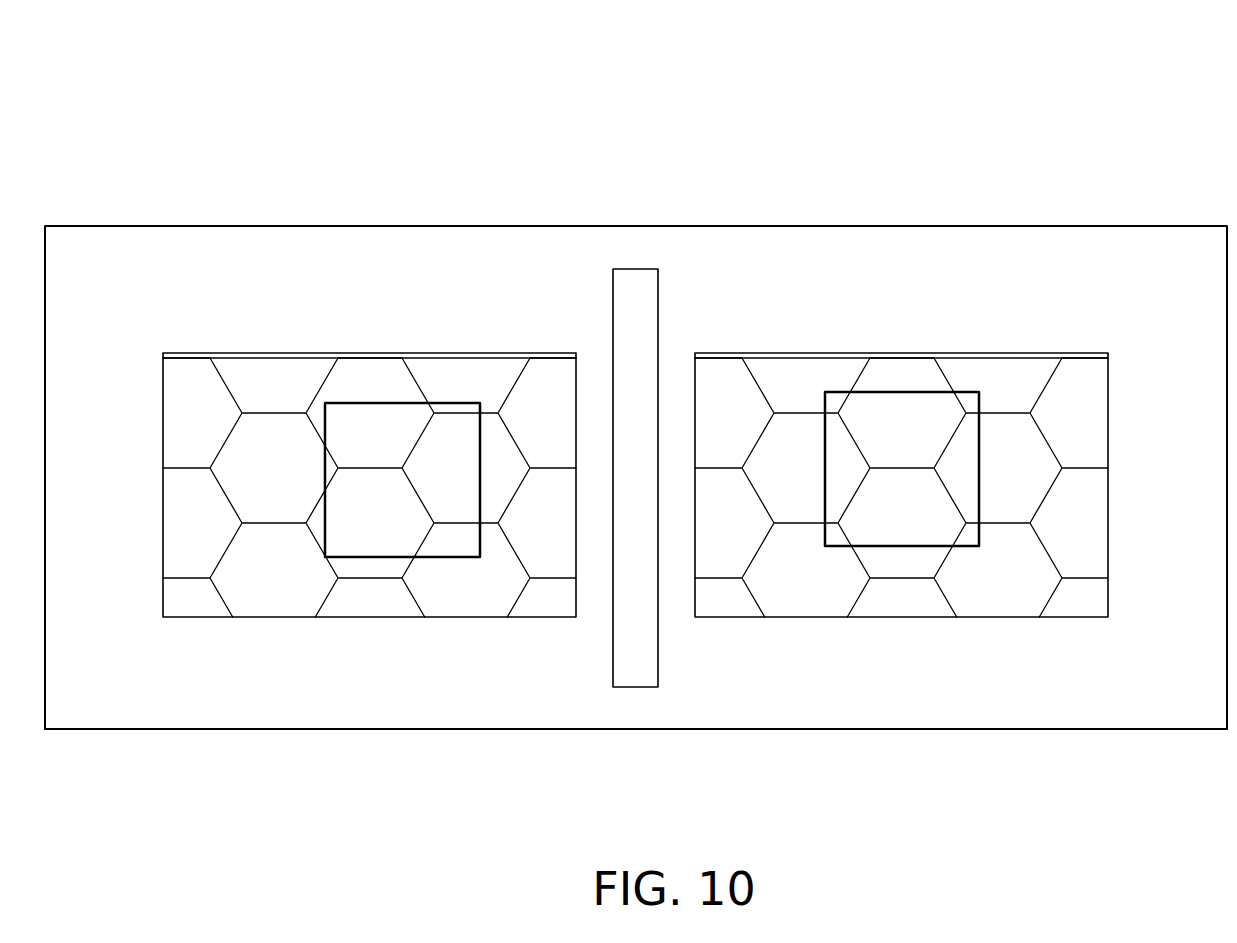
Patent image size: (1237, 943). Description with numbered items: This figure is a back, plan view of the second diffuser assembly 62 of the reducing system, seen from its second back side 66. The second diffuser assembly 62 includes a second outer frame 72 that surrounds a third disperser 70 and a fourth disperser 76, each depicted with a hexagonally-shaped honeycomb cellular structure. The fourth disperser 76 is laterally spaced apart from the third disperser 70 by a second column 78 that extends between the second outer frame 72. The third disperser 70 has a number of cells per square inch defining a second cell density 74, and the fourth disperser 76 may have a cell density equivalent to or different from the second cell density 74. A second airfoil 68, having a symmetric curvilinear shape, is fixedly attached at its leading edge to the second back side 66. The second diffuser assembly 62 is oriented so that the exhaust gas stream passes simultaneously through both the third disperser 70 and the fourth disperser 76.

The second diffuser assembly 62 is at (943, 137).
The second back side 66 is at (419, 687).
The second airfoil 68 is at (642, 348).
The third disperser 70 is at (998, 533).
The second outer frame 72 is at (343, 313).
The second cell density 74 is at (447, 417).
The fourth disperser 76 is at (266, 570).
The second column 78 is at (594, 602).